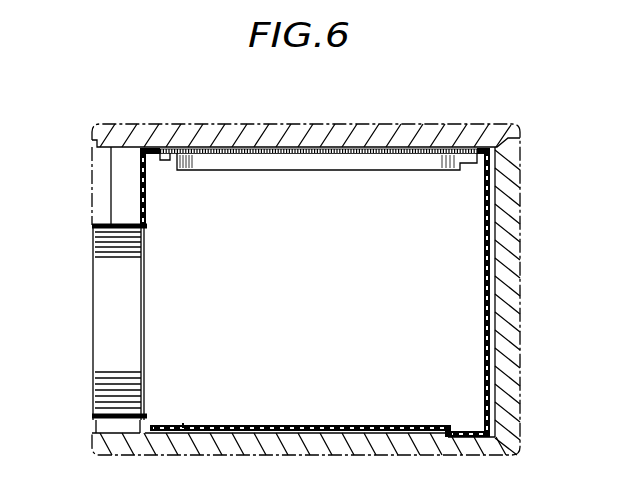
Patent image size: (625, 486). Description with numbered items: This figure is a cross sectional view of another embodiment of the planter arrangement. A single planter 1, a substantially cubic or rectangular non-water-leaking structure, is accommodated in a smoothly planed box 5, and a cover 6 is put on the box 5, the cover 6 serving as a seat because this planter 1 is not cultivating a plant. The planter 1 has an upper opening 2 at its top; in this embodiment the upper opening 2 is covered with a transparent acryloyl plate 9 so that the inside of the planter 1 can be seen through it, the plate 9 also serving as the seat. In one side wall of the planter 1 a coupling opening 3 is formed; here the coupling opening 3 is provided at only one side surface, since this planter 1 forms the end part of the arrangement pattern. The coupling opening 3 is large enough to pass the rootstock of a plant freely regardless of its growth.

The planter 1 is at (490, 201).
The upper opening 2 is at (325, 164).
The coupling opening 3 is at (100, 317).
The box 5 is at (517, 304).
The cover 6 is at (229, 128).
The transparent acryloyl plate 9 is at (276, 154).